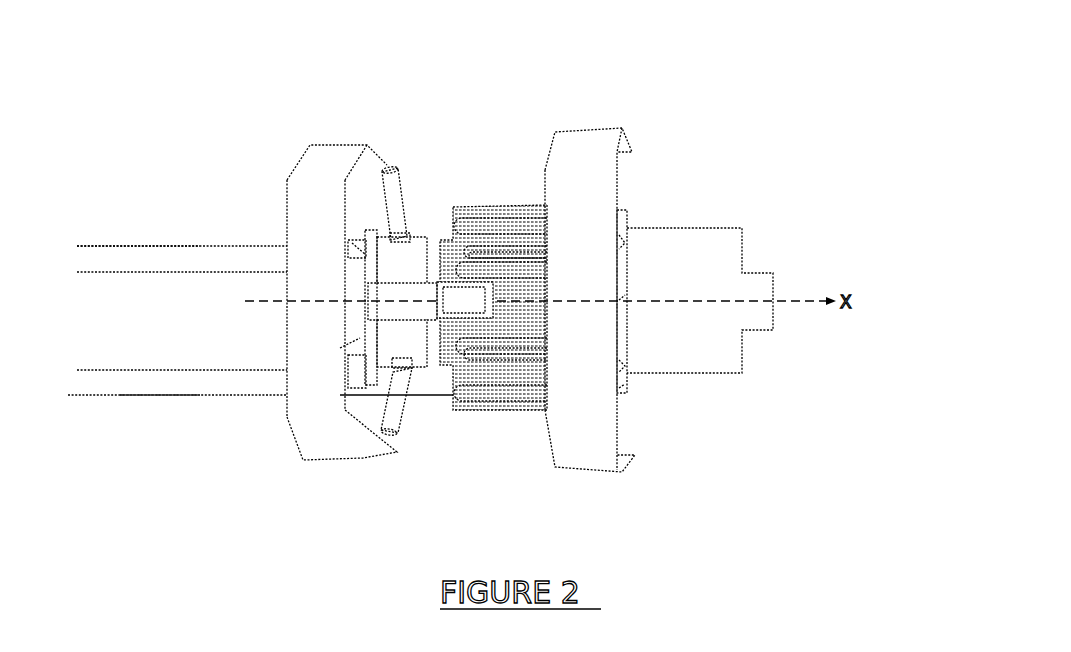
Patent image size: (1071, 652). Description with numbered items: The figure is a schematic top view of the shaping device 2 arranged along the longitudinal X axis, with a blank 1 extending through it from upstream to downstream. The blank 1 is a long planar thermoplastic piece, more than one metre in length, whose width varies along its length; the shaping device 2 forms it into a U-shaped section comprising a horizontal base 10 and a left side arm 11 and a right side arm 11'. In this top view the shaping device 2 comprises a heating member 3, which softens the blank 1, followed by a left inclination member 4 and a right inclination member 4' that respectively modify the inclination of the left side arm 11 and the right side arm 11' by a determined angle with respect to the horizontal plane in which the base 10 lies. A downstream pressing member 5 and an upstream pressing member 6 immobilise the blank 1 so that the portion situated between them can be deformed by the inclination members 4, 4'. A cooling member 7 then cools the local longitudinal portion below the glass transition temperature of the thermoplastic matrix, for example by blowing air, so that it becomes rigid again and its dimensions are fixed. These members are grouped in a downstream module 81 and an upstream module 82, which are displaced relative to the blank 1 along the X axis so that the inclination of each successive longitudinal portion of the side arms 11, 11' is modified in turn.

The blank 1 is at (275, 250).
The shaping device 2 is at (298, 82).
The heating member 3 is at (517, 258).
The left inclination member 4 is at (406, 184).
The right inclination member 4' is at (434, 441).
The downstream pressing member 5 is at (645, 245).
The upstream pressing member 6 is at (374, 228).
The cooling member 7 is at (392, 345).
The horizontal base 10 is at (128, 355).
The left side arm 11 is at (138, 198).
The right side arm 11' is at (188, 417).
The downstream module 81 is at (596, 110).
The upstream module 82 is at (340, 133).